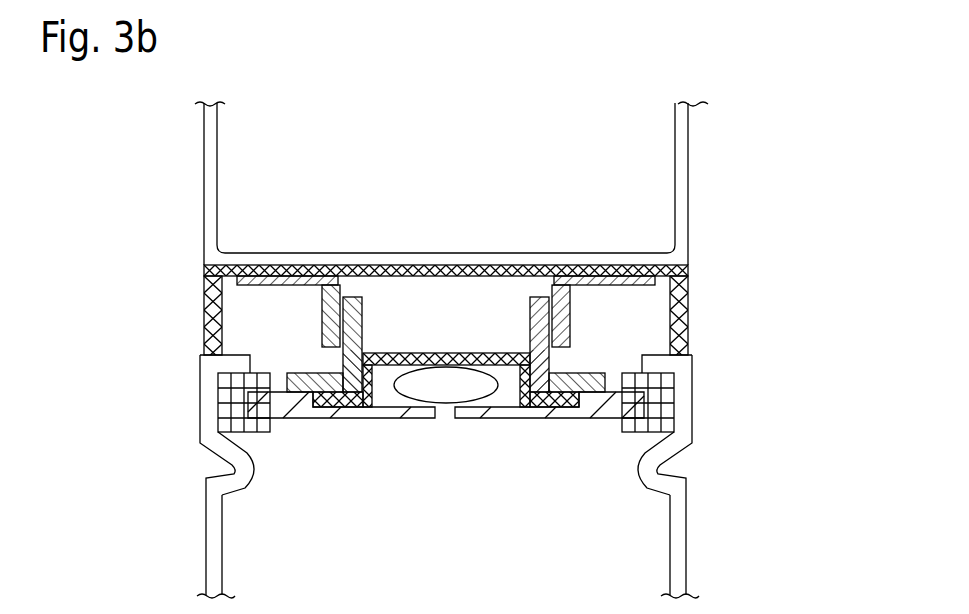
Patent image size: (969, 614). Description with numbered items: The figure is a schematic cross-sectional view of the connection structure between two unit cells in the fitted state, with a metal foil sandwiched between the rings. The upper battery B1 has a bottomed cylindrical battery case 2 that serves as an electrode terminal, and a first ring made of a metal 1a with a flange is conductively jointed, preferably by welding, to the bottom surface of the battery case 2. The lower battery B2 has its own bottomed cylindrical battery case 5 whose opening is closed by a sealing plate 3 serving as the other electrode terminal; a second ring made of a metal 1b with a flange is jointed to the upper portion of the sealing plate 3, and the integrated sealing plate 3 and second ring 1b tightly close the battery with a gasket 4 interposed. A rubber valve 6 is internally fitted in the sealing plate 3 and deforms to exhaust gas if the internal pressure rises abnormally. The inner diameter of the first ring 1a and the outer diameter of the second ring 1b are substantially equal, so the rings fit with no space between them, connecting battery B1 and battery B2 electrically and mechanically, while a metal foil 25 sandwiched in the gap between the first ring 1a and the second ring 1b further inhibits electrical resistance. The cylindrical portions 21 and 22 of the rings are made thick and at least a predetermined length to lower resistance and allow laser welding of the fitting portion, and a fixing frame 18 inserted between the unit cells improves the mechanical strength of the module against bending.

The battery B1 is at (166, 198).
The battery B2 is at (170, 510).
The battery case 2 is at (682, 188).
The fixing frame 18 is at (686, 283).
The cylindrical portion 21 is at (689, 313).
The cylindrical portion 22 is at (584, 373).
The metal foil 25 is at (345, 292).
The first ring made of a metal 1a is at (338, 314).
The second ring made of a metal 1b is at (338, 367).
The rubber valve 6 is at (440, 388).
The sealing plate 3 is at (613, 405).
The gasket 4 is at (678, 403).
The battery case 5 is at (684, 560).